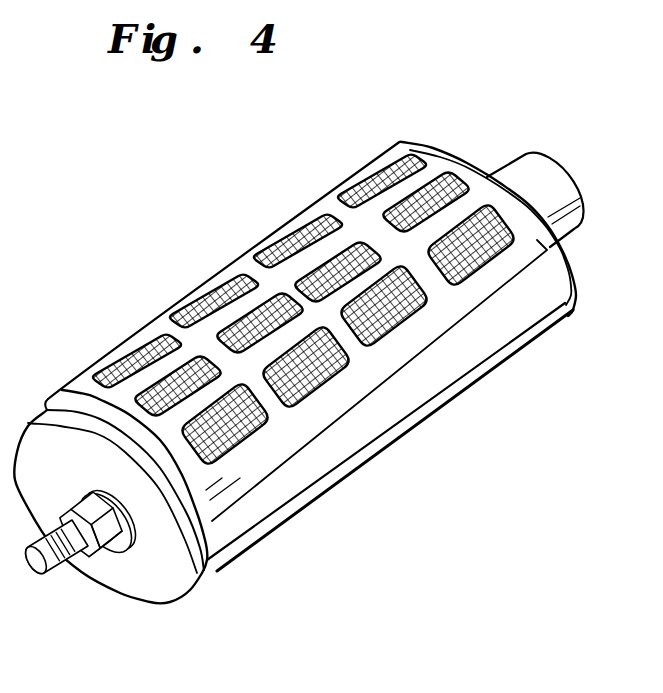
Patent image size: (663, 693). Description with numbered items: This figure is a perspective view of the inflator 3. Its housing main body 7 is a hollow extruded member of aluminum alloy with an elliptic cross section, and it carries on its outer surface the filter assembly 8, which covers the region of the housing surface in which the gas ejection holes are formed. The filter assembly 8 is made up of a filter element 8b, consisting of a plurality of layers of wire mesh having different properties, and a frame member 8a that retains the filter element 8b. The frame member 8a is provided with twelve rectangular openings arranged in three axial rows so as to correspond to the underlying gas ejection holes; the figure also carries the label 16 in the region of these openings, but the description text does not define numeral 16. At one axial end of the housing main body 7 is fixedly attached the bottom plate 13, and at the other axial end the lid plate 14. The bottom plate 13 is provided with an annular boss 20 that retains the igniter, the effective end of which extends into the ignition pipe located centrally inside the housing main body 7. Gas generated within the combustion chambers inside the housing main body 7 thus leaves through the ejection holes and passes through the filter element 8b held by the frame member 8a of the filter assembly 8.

The inflator 3 is at (199, 156).
The housing main body 7 is at (427, 413).
The filter assembly 8 is at (338, 179).
The frame member 8a is at (241, 266).
The filter element 8b is at (292, 228).
The bottom plate 13 is at (572, 257).
The lid plate 14 is at (143, 583).
The mesh openings 16 is at (488, 253).
The annular boss 20 is at (562, 175).